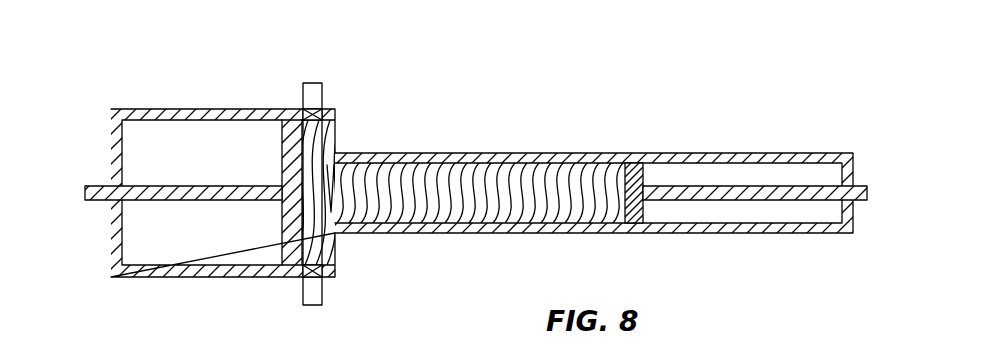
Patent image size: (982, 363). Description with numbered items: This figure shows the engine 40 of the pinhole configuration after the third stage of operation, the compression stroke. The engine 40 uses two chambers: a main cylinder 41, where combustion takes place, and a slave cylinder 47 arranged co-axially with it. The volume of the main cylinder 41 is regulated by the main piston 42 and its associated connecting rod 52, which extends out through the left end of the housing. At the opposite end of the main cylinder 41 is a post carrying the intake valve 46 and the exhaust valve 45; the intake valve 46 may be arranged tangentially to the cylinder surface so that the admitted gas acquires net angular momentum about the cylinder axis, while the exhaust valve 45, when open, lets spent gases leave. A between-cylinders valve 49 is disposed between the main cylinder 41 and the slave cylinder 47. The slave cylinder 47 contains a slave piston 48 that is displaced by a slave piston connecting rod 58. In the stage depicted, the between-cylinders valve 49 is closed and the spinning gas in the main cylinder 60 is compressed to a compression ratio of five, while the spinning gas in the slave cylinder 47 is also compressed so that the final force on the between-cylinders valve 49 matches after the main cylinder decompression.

The engine 40 is at (491, 179).
The main cylinder 41 is at (177, 130).
The main piston 42 is at (277, 250).
The exhaust valve 45 is at (310, 278).
The intake valve 46 is at (318, 104).
The slave cylinder 47 is at (537, 170).
The slave piston 48 is at (633, 170).
The between-cylinders valve 49 is at (337, 205).
The connecting rod 52 is at (101, 186).
The slave piston connecting rod 58 is at (734, 192).
The spinning gas in the main cylinder 60 is at (316, 140).